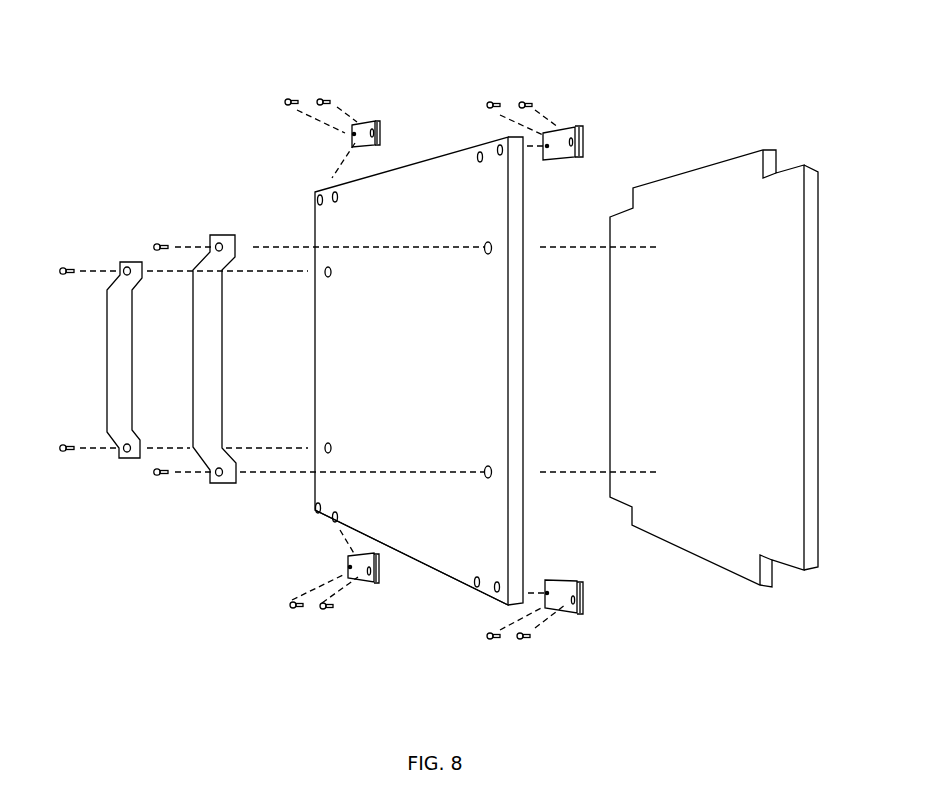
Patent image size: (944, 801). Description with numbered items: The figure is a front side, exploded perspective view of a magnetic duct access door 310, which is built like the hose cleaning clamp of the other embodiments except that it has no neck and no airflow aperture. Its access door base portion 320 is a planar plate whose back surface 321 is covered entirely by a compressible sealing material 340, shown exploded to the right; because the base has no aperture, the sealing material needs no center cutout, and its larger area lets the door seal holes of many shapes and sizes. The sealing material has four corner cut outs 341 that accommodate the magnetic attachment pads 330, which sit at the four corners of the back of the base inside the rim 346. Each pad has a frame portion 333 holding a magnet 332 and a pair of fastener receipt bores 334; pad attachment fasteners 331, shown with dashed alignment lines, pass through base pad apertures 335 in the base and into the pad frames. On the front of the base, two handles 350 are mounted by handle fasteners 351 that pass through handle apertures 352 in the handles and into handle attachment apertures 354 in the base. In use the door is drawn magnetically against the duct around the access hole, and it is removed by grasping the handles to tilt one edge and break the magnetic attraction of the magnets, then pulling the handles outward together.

The duct access door 310 is at (602, 53).
The access door base portion 320 is at (426, 370).
The back surface 321 is at (463, 567).
The magnetic attachment pads 330 is at (355, 122).
The pad attachment fasteners 331 is at (286, 100).
The magnets 332 is at (375, 131).
The frame portion 333 is at (366, 123).
The fastener receipt bores 334 is at (582, 140).
The base pad apertures 335 is at (335, 191).
The compressible sealing material 340 is at (782, 225).
The corner cut outs 341 is at (792, 160).
The rim 346 is at (517, 218).
The handles 350 is at (107, 366).
The handle fasteners 351 is at (63, 268).
The handle apertures 352 is at (127, 267).
The handle attachment apertures 354 is at (493, 248).